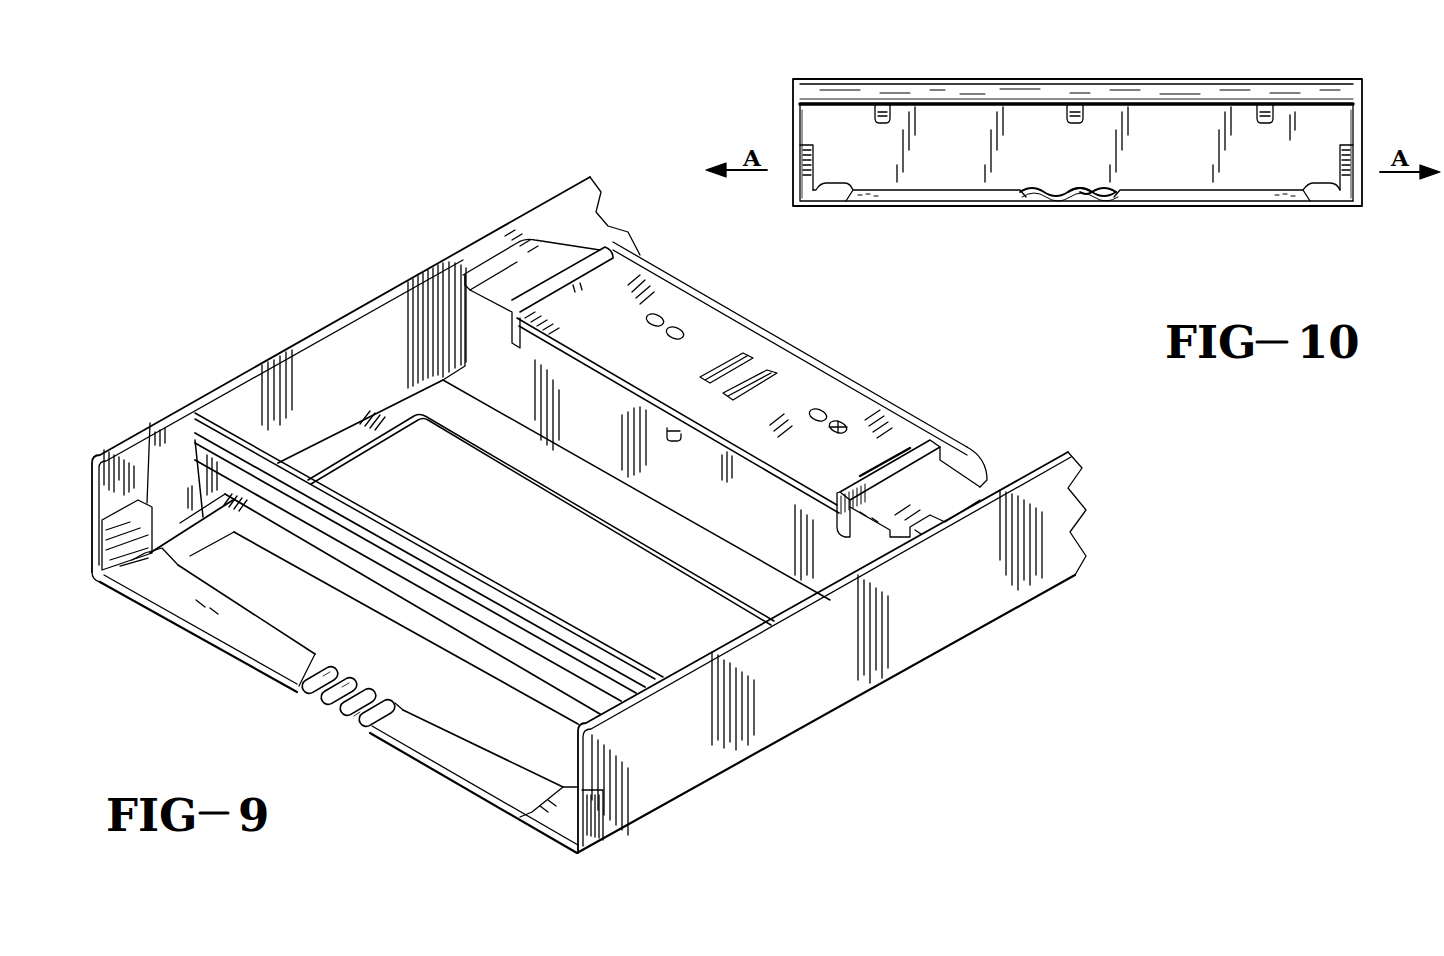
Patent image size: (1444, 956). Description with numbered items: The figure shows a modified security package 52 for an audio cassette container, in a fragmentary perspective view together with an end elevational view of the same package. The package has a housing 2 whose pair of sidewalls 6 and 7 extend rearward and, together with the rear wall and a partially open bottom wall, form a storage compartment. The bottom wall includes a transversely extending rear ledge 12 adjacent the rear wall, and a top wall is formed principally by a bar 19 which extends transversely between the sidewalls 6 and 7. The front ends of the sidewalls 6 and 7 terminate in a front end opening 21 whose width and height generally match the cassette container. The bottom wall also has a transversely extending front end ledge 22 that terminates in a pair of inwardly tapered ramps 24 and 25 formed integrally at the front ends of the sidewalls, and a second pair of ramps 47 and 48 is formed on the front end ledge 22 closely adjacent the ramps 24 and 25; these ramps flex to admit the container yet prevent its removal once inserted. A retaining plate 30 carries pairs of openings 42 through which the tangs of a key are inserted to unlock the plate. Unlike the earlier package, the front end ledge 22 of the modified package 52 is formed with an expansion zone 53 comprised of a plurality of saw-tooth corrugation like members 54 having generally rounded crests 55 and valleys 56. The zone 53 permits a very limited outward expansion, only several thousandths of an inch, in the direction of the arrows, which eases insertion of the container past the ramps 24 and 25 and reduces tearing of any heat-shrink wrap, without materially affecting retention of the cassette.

In FIG. 9, the housing 2 is at (800, 729).
In FIG. 10, the housing 2 is at (1077, 142).
In FIG. 9, the sidewall 6 is at (333, 348).
In FIG. 10, the sidewall 6 is at (795, 120).
In FIG. 9, the sidewall 7 is at (828, 686).
In FIG. 10, the sidewall 7 is at (1360, 118).
In FIG. 9, the rear ledge 12 is at (593, 488).
In FIG. 9, the bar 19 is at (352, 512).
In FIG. 10, the bar 19 is at (955, 83).
In FIG. 10, the front end opening 21 is at (1307, 127).
In FIG. 9, the front end ledge 22 is at (470, 765).
In FIG. 10, the front end ledge 22 is at (890, 192).
In FIG. 9, the ramp 24 is at (118, 543).
In FIG. 10, the ramp 24 is at (805, 172).
In FIG. 9, the ramp 25 is at (590, 843).
In FIG. 10, the ramp 25 is at (1350, 172).
In FIG. 9, the retaining plate 30 is at (805, 385).
In FIG. 9, the openings 42 is at (845, 425).
In FIG. 9, the ramp 47 is at (152, 568).
In FIG. 10, the ramp 47 is at (828, 190).
In FIG. 9, the ramp 48 is at (548, 820).
In FIG. 10, the ramp 48 is at (1310, 192).
In FIG. 9, the modified security package 52 is at (372, 270).
In FIG. 9, the expansion zone 53 is at (324, 705).
In FIG. 10, the expansion zone 53 is at (1050, 212).
In FIG. 9, the saw-tooth corrugation like members 54 is at (337, 672).
In FIG. 10, the saw-tooth corrugation like members 54 is at (1108, 195).
In FIG. 9, the crests 55 is at (365, 690).
In FIG. 10, the crests 55 is at (1072, 189).
In FIG. 9, the valleys 56 is at (356, 728).
In FIG. 10, the valleys 56 is at (1088, 196).